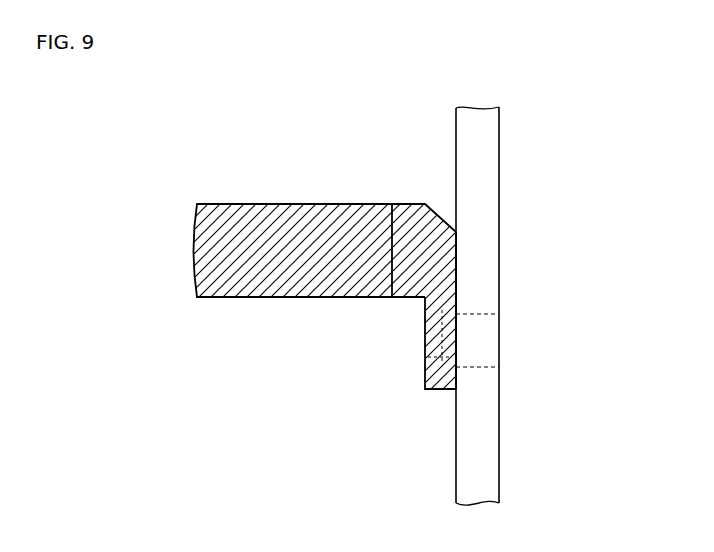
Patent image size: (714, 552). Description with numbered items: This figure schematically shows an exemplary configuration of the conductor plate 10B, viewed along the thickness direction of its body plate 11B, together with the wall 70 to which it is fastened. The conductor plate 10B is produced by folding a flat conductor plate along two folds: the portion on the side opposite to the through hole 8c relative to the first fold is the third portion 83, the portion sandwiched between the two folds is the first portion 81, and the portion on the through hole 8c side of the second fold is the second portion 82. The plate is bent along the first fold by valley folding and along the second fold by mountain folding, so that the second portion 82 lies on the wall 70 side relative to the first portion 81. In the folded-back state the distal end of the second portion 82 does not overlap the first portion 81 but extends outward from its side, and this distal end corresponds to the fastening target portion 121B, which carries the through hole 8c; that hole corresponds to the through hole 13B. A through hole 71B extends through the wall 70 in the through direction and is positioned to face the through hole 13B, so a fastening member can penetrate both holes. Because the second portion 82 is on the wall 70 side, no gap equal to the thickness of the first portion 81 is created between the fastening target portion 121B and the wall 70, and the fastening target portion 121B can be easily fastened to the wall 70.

The conductor plate 10B is at (333, 248).
The body plate 11B is at (293, 216).
The third portion 83 is at (266, 212).
The first portion 81 is at (407, 210).
The second portion 82 is at (449, 262).
The wall 70 is at (516, 306).
The through hole 71B is at (478, 314).
The through hole 13B is at (374, 336).
The through hole 8c is at (439, 336).
The fastening target portion 121B is at (377, 348).